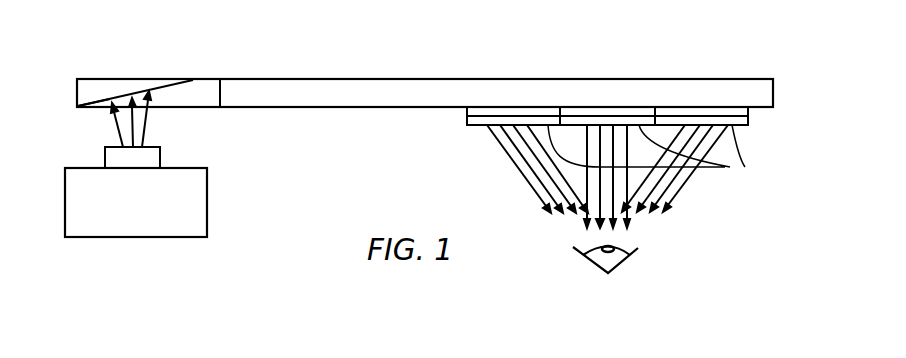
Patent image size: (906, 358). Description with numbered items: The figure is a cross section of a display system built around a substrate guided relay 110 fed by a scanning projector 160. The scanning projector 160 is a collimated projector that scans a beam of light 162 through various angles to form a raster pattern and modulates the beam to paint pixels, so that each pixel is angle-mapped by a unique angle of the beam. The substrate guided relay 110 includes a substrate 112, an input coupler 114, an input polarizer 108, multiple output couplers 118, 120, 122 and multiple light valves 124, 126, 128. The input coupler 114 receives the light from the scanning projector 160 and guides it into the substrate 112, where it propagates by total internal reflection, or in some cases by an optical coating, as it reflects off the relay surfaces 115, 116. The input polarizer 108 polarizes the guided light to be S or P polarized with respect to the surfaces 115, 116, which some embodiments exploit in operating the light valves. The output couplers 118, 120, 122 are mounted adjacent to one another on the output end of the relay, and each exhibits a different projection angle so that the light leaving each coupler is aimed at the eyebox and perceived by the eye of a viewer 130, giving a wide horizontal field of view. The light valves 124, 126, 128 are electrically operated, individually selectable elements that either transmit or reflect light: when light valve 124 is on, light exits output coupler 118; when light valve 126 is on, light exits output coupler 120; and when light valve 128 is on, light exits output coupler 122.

The input polarizer 108 is at (220, 92).
The substrate guided relay 110 is at (400, 49).
The substrate 112 is at (380, 109).
The input coupler 114 is at (93, 108).
The SGR surface 115 is at (292, 70).
The SGR surface 116 is at (299, 117).
The output coupler 118 is at (478, 132).
The output coupler 120 is at (576, 126).
The output coupler 122 is at (748, 120).
The light valve 124 is at (522, 107).
The light valve 126 is at (641, 107).
The light valve 128 is at (732, 107).
The eye of a viewer 130 is at (598, 267).
The scanning projector 160 is at (207, 210).
The beam of light 162 is at (170, 123).